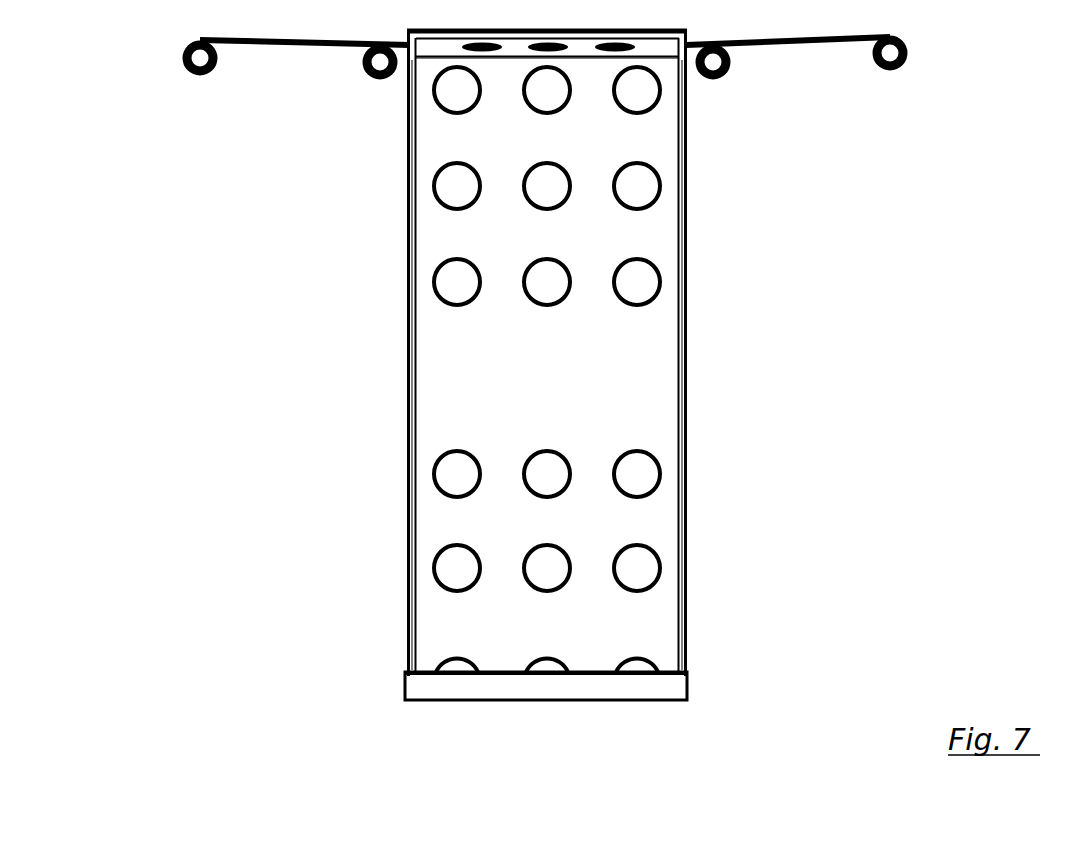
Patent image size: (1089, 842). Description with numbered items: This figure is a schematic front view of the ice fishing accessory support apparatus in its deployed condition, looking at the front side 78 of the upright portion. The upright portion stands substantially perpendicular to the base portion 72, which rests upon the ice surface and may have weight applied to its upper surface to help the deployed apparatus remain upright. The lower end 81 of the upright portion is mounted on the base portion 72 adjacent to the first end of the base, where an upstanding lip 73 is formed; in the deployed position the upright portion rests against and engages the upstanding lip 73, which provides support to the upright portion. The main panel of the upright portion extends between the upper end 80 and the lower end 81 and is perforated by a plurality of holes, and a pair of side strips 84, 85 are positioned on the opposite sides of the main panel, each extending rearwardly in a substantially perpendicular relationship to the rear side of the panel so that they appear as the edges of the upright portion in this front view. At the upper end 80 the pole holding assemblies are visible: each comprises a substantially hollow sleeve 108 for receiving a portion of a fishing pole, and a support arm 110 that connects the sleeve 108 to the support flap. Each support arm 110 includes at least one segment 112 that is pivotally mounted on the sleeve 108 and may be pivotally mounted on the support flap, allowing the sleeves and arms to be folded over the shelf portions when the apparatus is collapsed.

The base portion 72 is at (660, 702).
The upstanding lip 73 is at (423, 681).
The front side 78 is at (640, 386).
The upper end 80 is at (430, 70).
The lower end 81 is at (668, 663).
The side strip 84 is at (687, 404).
The side strip 85 is at (408, 370).
The sleeve 108 is at (200, 77).
The support arm 110 is at (268, 48).
The segment 112 is at (745, 50).